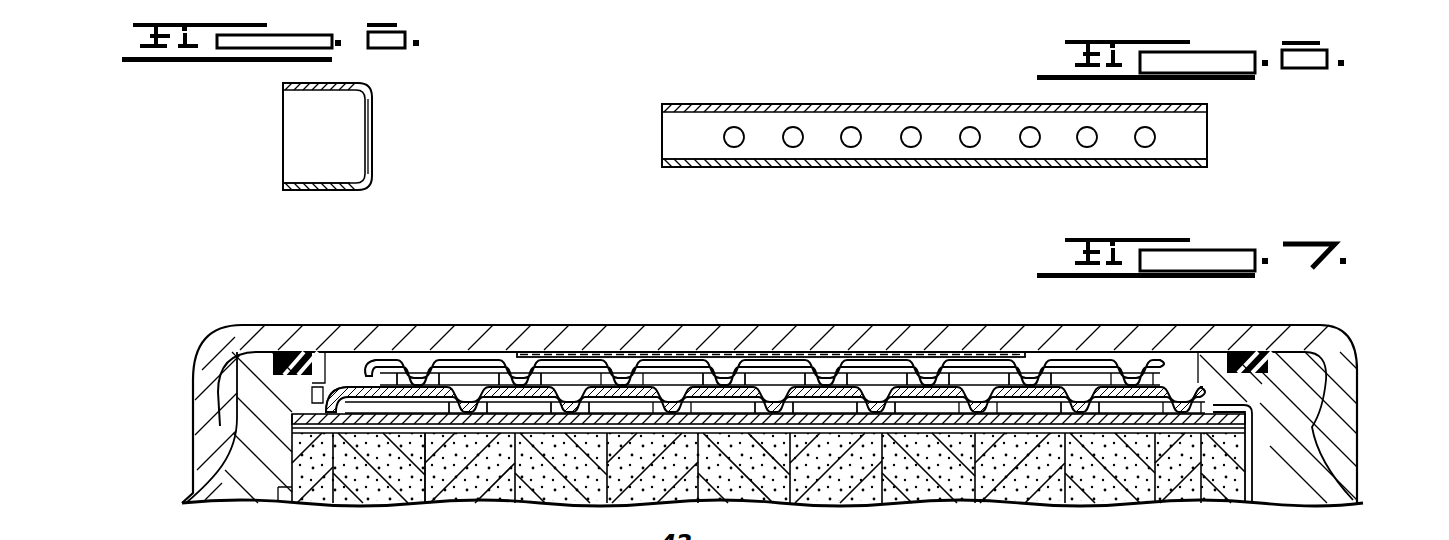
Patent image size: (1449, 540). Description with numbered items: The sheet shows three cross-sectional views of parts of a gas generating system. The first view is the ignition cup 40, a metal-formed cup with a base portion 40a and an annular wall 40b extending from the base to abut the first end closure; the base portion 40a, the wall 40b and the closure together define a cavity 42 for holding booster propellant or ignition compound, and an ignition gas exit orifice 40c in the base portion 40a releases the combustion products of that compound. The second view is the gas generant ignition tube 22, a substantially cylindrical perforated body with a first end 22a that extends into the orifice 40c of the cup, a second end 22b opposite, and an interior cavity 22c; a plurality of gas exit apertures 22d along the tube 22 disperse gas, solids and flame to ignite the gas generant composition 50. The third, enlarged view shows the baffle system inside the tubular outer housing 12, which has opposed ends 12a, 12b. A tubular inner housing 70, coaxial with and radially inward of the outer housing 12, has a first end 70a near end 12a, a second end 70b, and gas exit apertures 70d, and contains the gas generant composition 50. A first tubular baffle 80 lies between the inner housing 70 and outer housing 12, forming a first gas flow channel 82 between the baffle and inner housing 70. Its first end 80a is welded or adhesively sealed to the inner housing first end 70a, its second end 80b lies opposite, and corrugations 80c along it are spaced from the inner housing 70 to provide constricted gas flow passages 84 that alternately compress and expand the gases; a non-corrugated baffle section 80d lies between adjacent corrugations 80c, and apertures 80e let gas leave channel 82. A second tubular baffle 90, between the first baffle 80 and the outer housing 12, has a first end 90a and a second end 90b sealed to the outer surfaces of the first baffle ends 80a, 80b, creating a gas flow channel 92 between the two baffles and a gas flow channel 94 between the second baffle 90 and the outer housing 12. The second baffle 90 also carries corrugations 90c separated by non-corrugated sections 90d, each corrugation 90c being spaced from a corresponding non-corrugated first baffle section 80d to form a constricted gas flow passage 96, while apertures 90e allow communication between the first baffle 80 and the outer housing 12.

In FIG. 7, the tubular outer housing 12 is at (262, 326).
In FIG. 7, the first end of outer housing 12a is at (208, 356).
In FIG. 7, the second end of outer housing 12b is at (1342, 368).
In FIG. 6, the gas generant ignition tube 22 is at (826, 106).
In FIG. 6, the first end of ignition tube 22a is at (668, 135).
In FIG. 6, the second end of ignition tube 22b is at (1196, 133).
In FIG. 6, the interior cavity of ignition tube 22c is at (878, 148).
In FIG. 6, the gas exit apertures of ignition tube 22d is at (969, 129).
In FIG. 5, the ignition cup 40 is at (374, 92).
In FIG. 5, the base portion of ignition cup 40a is at (372, 180).
In FIG. 5, the annular wall of ignition cup 40b is at (302, 190).
In FIG. 5, the ignition gas exit orifice 40c is at (373, 128).
In FIG. 5, the cavity of ignition cup 42 is at (294, 131).
In FIG. 7, the gas generant composition 50 is at (376, 488).
In FIG. 7, the tubular inner housing 70 is at (290, 501).
In FIG. 7, the first end of inner housing 70a is at (225, 426).
In FIG. 7, the second end of inner housing 70b is at (1254, 428).
In FIG. 7, the gas exit apertures of inner housing 70d is at (440, 434).
In FIG. 7, the first tubular baffle 80 is at (633, 399).
In FIG. 7, the first end of first baffle 80a is at (345, 393).
In FIG. 7, the second end of first baffle 80b is at (1184, 400).
In FIG. 7, the corrugations of first baffle 80c is at (904, 414).
In FIG. 7, the non-corrugated section of first baffle 80d is at (812, 414).
In FIG. 7, the apertures of first baffle 80e is at (1074, 414).
In FIG. 7, the first gas flow channel 82 is at (536, 414).
In FIG. 7, the constricted gas flow passages 84 is at (740, 424).
In FIG. 7, the second tubular baffle 90 is at (682, 358).
In FIG. 7, the first end of second baffle 90a is at (393, 368).
In FIG. 7, the second end of second baffle 90b is at (1130, 366).
In FIG. 7, the corrugations of second baffle 90c is at (848, 378).
In FIG. 7, the non-corrugated section of second baffle 90d is at (912, 378).
In FIG. 7, the apertures of second baffle 90e is at (447, 374).
In FIG. 7, the gas flow channel between baffles 92 is at (578, 352).
In FIG. 7, the gas flow channel between second baffle and outer housing 94 is at (778, 366).
In FIG. 7, the constricted gas flow passage 96 is at (983, 376).